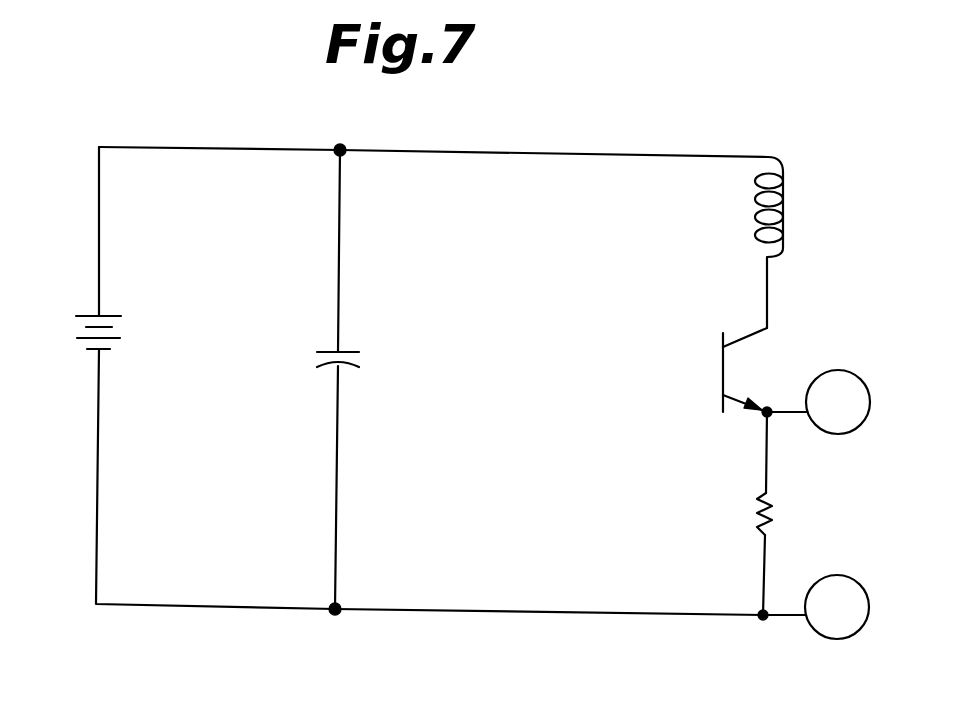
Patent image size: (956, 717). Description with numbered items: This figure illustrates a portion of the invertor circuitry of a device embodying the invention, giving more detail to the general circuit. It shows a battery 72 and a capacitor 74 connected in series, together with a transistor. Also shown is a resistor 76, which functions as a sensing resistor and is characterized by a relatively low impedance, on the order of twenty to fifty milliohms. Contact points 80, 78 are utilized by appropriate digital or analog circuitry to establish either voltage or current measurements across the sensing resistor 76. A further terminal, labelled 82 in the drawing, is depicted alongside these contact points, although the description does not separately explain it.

The battery 72 is at (84, 316).
The capacitor 74 is at (323, 363).
The resistor 76 is at (772, 514).
The contact point 78 is at (783, 202).
The contact point 80 is at (855, 373).
The terminal 2 82 is at (848, 636).